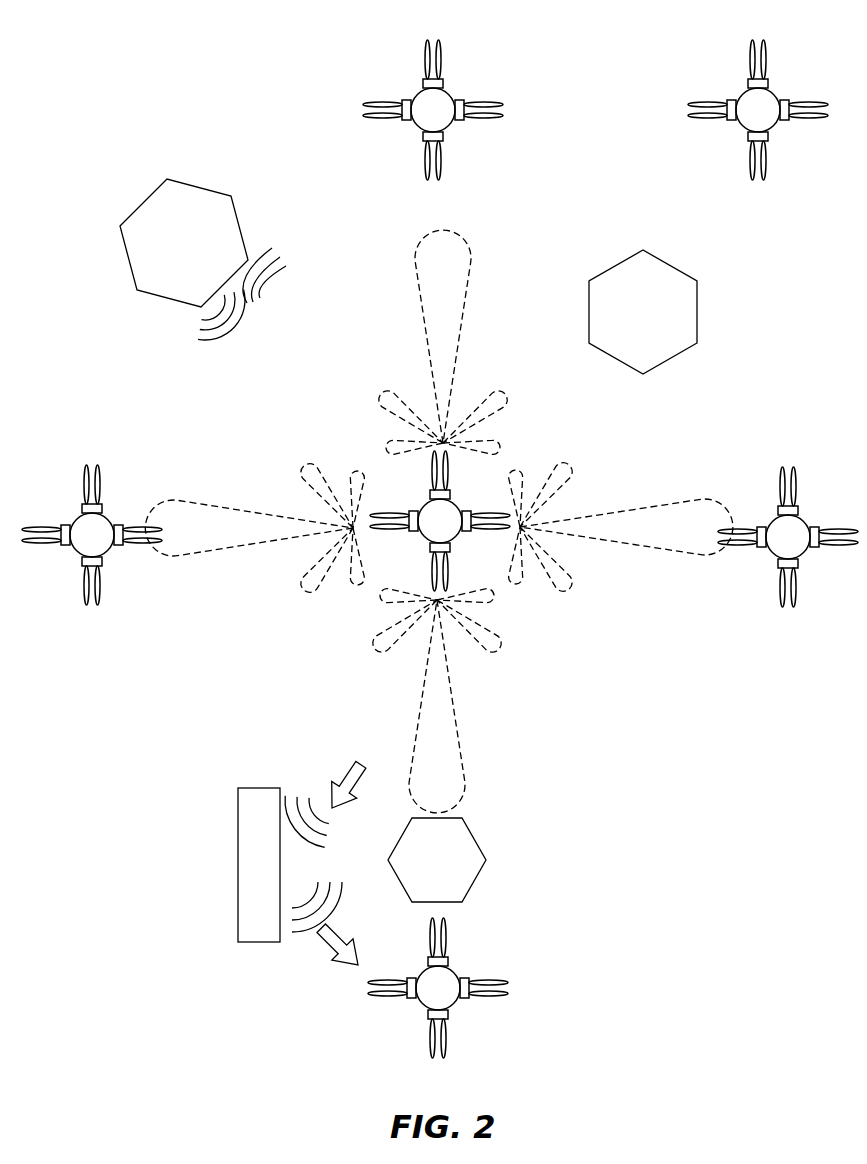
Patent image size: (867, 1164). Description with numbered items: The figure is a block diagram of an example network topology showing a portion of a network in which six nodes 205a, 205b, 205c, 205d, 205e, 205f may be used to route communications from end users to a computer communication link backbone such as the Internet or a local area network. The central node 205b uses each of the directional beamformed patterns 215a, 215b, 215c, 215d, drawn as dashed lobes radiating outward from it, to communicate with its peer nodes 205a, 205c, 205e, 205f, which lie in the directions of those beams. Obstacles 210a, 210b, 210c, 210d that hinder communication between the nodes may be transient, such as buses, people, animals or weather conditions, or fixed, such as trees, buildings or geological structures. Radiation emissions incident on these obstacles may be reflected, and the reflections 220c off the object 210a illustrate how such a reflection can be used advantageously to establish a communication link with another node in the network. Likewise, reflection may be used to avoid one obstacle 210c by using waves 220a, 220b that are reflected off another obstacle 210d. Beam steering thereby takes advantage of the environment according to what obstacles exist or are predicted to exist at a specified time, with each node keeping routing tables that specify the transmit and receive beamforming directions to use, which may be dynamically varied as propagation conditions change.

The node 205a is at (108, 515).
The node 205b is at (457, 504).
The node 205c is at (457, 100).
The node 205d is at (740, 93).
The node 205e is at (800, 515).
The node 205f is at (455, 1006).
The obstacle 210a is at (140, 203).
The obstacle 210b is at (672, 263).
The obstacle 210c is at (467, 846).
The obstacle 210d is at (238, 848).
The directional beamformed pattern 215a is at (207, 507).
The directional beamformed pattern 215b is at (469, 282).
The directional beamformed pattern 215c is at (685, 505).
The directional beamformed pattern 215d is at (468, 778).
The reflected wave 220a is at (337, 773).
The reflected wave 220b is at (334, 963).
The reflection 220c is at (272, 283).